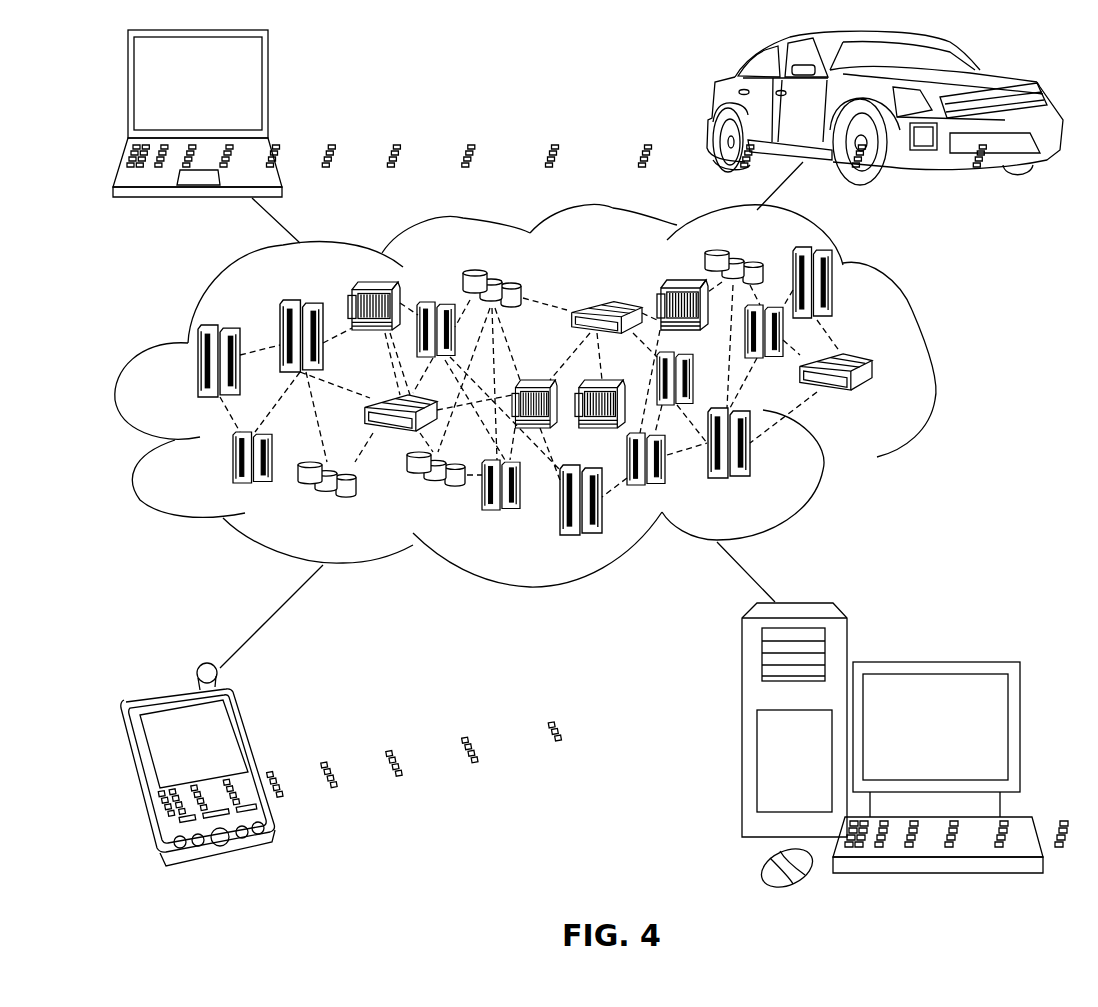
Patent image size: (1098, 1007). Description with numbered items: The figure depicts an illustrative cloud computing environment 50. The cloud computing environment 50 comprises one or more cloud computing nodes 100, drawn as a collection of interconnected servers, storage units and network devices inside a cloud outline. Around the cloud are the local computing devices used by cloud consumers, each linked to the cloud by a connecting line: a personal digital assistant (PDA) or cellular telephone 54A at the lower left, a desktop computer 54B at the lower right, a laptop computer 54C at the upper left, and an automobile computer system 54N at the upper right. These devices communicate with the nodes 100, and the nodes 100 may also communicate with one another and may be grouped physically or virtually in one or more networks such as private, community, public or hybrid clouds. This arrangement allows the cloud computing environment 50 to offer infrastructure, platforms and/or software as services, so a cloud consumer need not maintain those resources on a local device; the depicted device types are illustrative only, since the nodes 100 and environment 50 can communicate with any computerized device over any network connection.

The cloud computing environment 50 is at (937, 370).
The cloud computing nodes 100 is at (878, 402).
The personal digital assistant (PDA) or cellular telephone 54A is at (260, 758).
The desktop computer 54B is at (938, 660).
The laptop computer 54C is at (268, 91).
The automobile computer system 54N is at (712, 107).